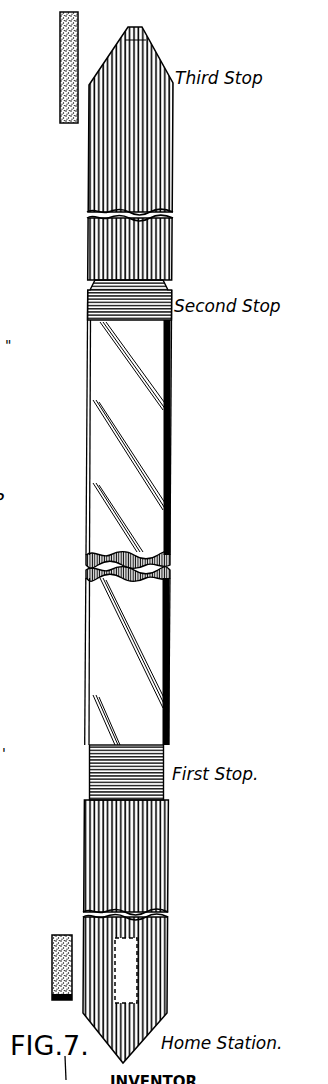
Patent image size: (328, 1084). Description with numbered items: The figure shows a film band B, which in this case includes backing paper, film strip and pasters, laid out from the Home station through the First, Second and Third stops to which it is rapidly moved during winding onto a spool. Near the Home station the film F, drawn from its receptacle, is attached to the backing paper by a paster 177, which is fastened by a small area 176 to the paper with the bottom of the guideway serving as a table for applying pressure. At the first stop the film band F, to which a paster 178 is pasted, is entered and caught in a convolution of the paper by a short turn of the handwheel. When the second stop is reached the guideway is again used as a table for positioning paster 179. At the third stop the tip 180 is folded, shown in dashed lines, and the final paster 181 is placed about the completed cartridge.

The tip 180 is at (134, 27).
The final paster 181 is at (60, 34).
The paster 179 is at (150, 290).
The paster 178 is at (166, 752).
The paster 177 is at (138, 947).
The small area 176 is at (67, 1002).
The film band B is at (165, 515).
The film F is at (140, 593).